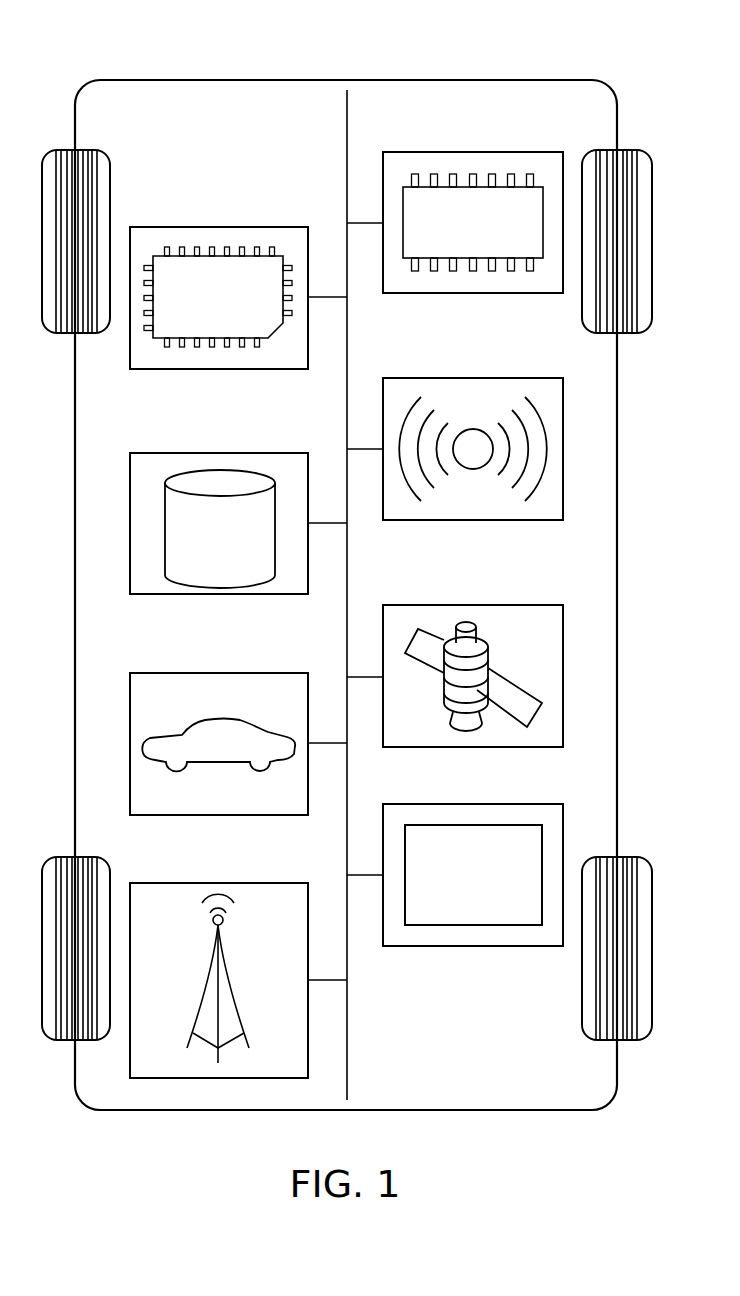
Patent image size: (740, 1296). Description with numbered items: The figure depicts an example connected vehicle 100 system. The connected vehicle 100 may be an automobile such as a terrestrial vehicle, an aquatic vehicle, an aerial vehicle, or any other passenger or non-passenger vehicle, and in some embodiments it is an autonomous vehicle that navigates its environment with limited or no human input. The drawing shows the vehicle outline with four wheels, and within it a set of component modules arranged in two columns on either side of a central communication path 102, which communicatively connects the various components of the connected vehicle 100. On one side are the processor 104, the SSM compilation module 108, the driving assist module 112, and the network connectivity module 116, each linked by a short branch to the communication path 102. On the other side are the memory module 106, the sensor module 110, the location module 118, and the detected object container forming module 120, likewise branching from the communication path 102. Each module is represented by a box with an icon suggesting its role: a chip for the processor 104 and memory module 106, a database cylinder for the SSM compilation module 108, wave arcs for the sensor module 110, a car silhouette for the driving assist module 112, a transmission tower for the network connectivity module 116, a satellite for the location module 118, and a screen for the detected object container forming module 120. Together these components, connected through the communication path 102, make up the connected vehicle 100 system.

The connected vehicle 100 is at (158, 80).
The communication path 102 is at (347, 132).
The processor 104 is at (213, 227).
The memory module 106 is at (473, 152).
The SSM compilation module 108 is at (213, 453).
The sensor module 110 is at (478, 378).
The driving assist module 112 is at (213, 673).
The network connectivity module 116 is at (200, 1078).
The location module 118 is at (473, 605).
The detected object container forming module 120 is at (468, 946).